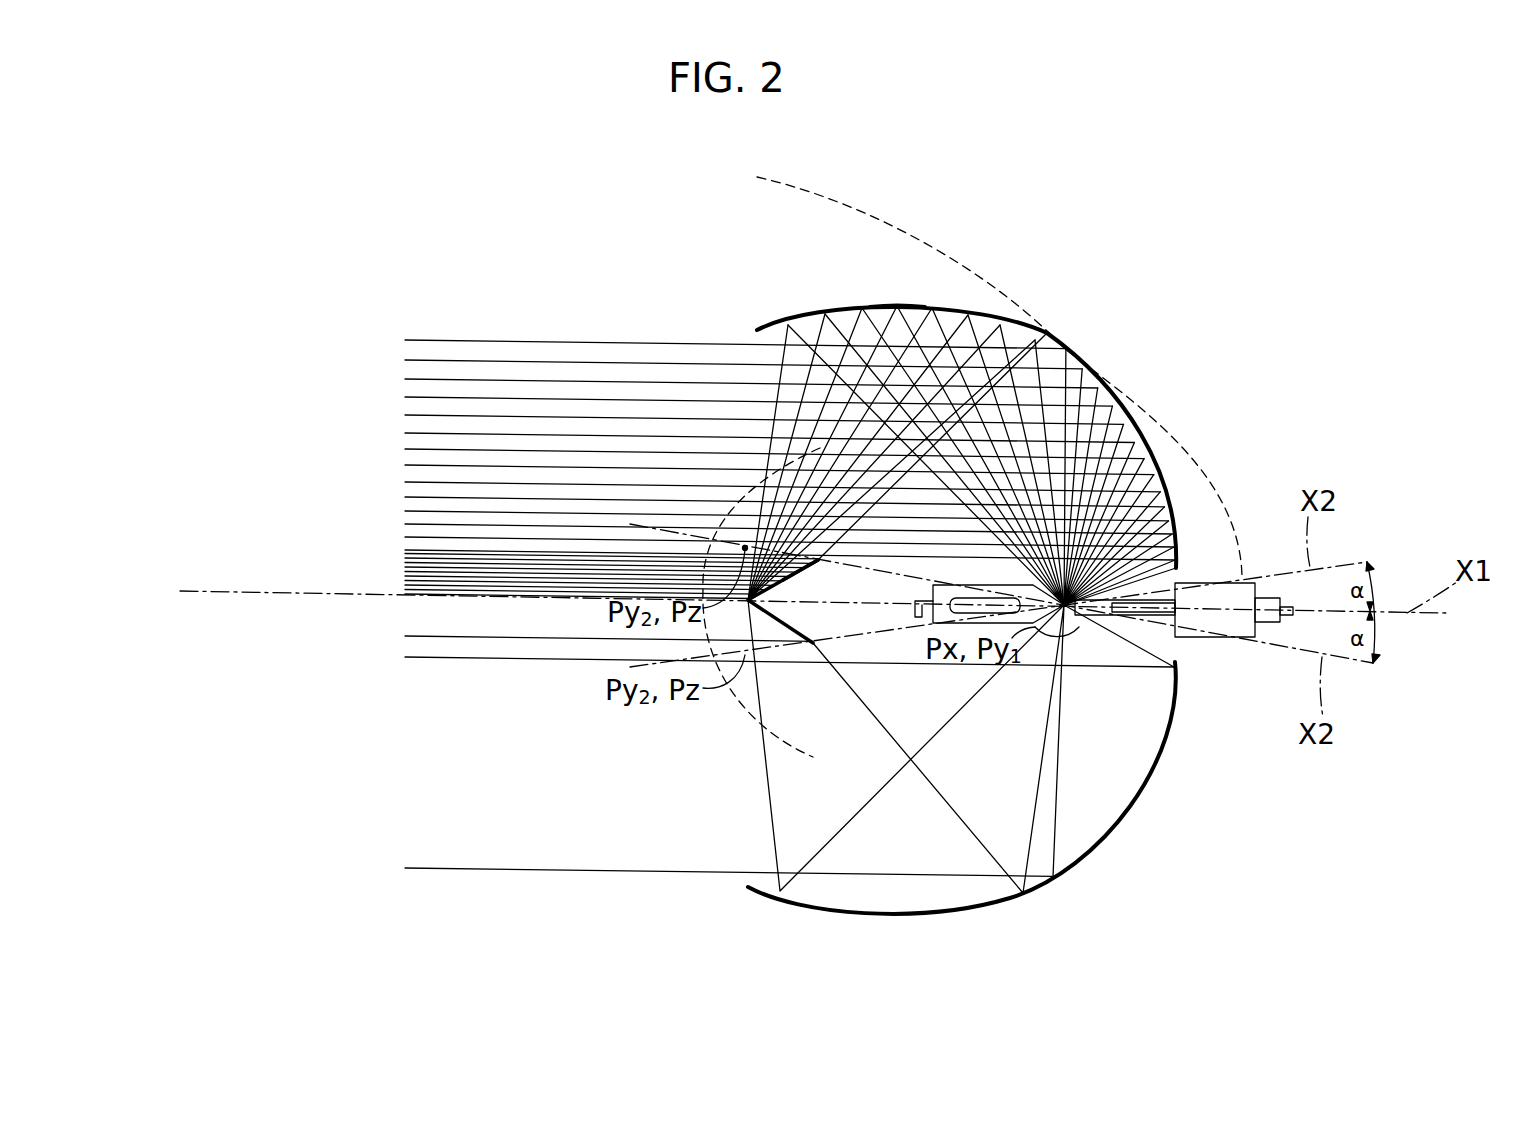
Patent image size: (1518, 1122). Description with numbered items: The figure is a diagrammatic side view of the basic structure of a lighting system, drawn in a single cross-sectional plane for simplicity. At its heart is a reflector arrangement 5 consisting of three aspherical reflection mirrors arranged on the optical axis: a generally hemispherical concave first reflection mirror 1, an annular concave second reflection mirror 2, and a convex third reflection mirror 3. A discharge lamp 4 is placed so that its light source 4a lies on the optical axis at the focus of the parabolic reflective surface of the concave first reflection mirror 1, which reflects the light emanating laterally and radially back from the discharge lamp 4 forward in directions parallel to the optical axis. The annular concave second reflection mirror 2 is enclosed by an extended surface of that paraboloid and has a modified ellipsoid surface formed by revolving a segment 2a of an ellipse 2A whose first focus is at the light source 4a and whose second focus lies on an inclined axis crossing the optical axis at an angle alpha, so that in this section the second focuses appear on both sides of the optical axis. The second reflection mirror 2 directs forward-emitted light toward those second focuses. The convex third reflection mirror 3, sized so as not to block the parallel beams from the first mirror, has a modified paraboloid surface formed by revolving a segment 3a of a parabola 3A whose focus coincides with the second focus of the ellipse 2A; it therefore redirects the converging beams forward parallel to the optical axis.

The concave first reflection mirror 1 is at (1127, 410).
The annular concave second reflection mirror 2 is at (772, 323).
The segment of an ellipse 2a is at (895, 305).
The ellipse 2A is at (1177, 436).
The convex third reflection mirror 3 is at (797, 648).
The segment of a parabola 3a is at (800, 572).
The parabola 3A is at (732, 735).
The discharge lamp 4 is at (1203, 636).
The light source 4a is at (1079, 627).
The reflector arrangement 5 is at (1133, 341).